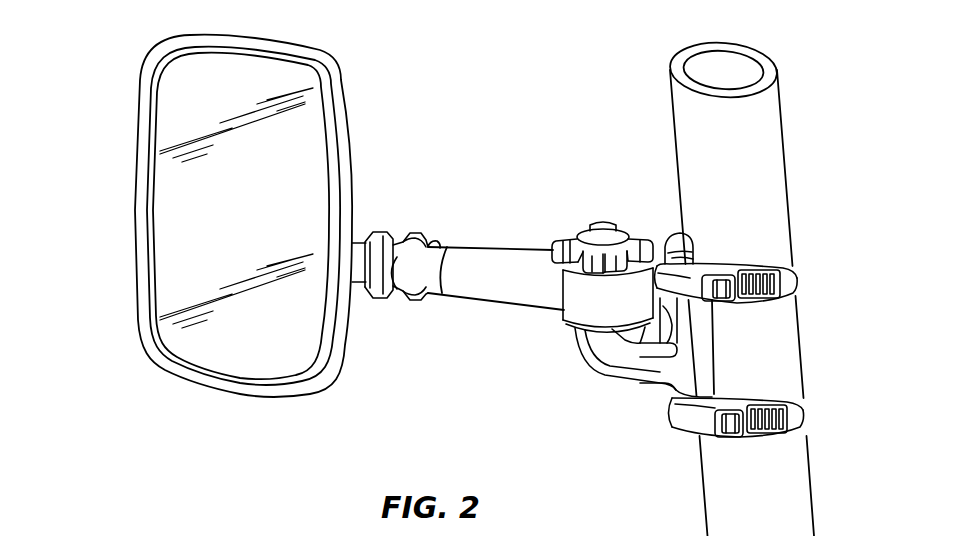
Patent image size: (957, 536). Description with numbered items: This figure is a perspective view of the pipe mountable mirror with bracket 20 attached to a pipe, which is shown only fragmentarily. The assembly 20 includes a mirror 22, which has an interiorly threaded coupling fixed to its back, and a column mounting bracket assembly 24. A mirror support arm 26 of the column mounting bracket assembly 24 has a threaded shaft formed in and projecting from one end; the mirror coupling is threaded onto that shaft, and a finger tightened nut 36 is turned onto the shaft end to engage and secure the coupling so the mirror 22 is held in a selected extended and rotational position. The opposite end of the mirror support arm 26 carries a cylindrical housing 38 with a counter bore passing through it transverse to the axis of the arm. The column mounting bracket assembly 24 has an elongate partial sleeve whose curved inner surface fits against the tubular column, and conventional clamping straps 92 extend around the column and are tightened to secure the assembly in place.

The pipe mountable mirror with bracket 20 is at (485, 118).
The mirror 22 is at (172, 110).
The column mounting bracket assembly 24 is at (553, 407).
The mirror support arm 26 is at (502, 253).
The finger tightened nut 36 is at (373, 297).
The cylindrical housing 38 is at (592, 305).
The clamping straps 92 is at (803, 410).